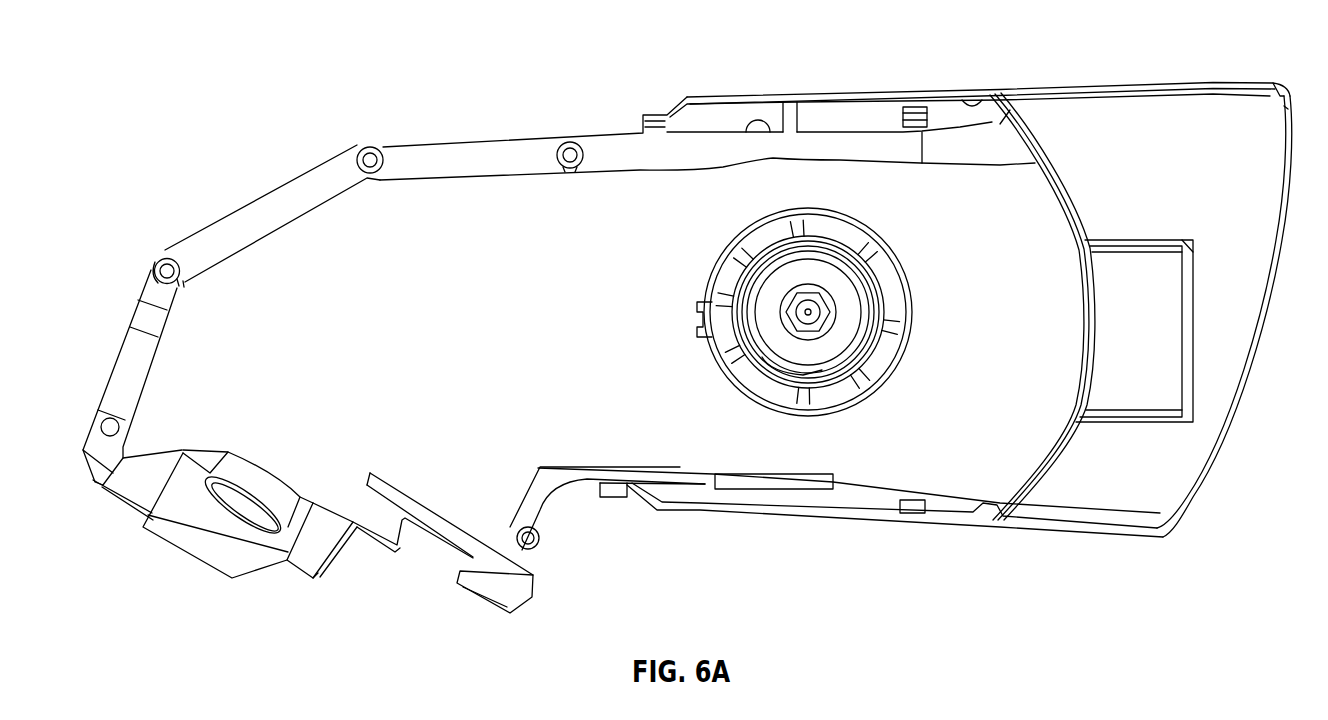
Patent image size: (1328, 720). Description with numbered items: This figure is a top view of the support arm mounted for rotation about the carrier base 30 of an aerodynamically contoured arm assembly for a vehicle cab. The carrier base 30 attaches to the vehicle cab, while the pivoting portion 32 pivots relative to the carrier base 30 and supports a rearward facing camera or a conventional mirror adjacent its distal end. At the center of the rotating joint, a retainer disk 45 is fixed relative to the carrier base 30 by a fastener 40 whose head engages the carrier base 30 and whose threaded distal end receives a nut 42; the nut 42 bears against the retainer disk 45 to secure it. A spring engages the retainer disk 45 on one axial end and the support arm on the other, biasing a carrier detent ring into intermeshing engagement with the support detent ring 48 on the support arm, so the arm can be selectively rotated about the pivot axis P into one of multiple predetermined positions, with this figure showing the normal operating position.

The carrier base 30 is at (1248, 67).
The pivoting portion 32 is at (220, 128).
The fastener 40 is at (822, 290).
The nut 42 is at (827, 322).
The retainer disk 45 is at (852, 300).
The support detent ring 48 is at (695, 321).
The pivot axis P is at (807, 315).